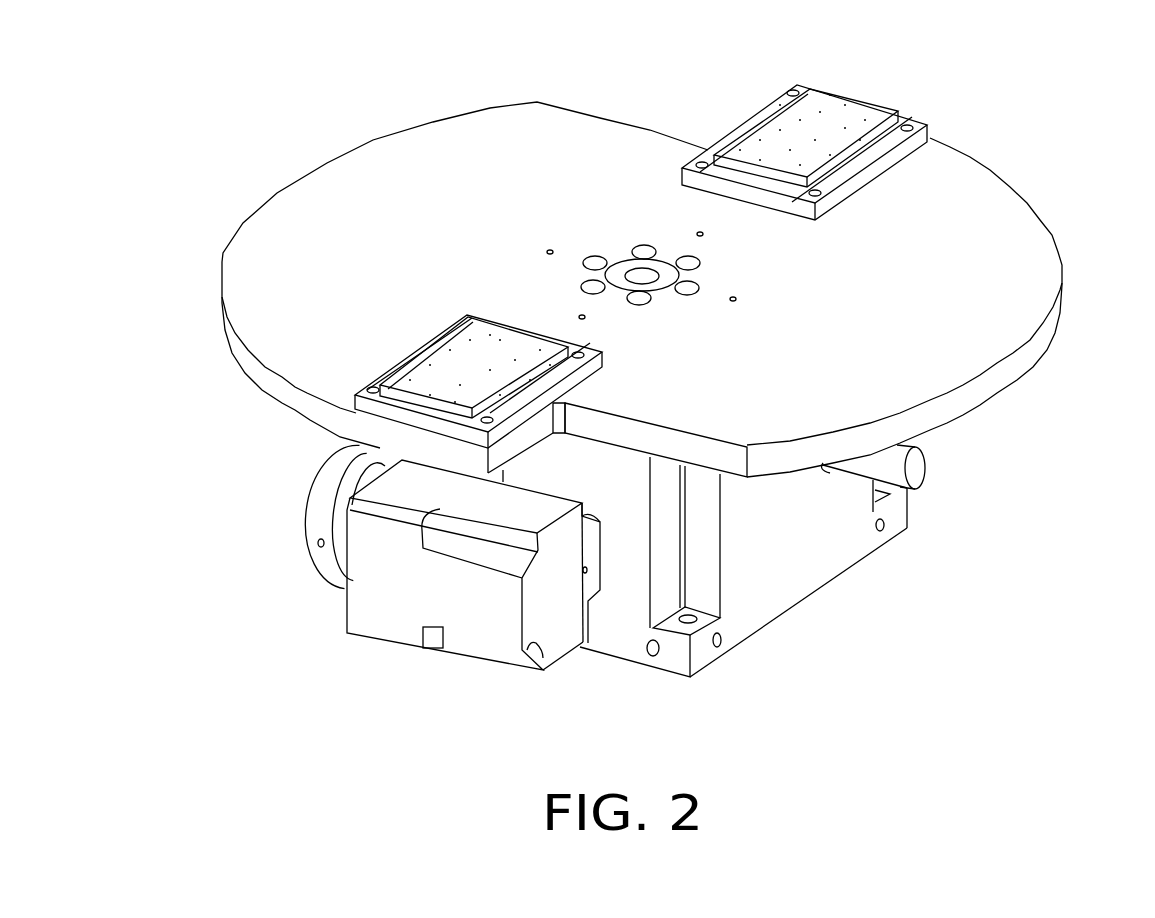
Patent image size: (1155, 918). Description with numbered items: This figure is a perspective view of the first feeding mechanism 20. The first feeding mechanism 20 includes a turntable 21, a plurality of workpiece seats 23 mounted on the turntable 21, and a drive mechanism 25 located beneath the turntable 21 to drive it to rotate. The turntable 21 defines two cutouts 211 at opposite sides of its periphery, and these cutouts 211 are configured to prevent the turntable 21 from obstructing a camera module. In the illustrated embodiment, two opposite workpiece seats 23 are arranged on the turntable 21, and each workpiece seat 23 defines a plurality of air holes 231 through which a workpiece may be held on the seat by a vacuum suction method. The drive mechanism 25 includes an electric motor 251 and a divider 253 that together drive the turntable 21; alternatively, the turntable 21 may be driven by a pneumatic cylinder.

The first feeding mechanism 20 is at (287, 97).
The turntable 21 is at (1022, 272).
The cutouts 211 is at (640, 432).
The workpiece seat 23 is at (910, 147).
The air holes 231 is at (850, 107).
The drive mechanism 25 is at (917, 642).
The electric motor 251 is at (595, 589).
The divider 253 is at (817, 542).